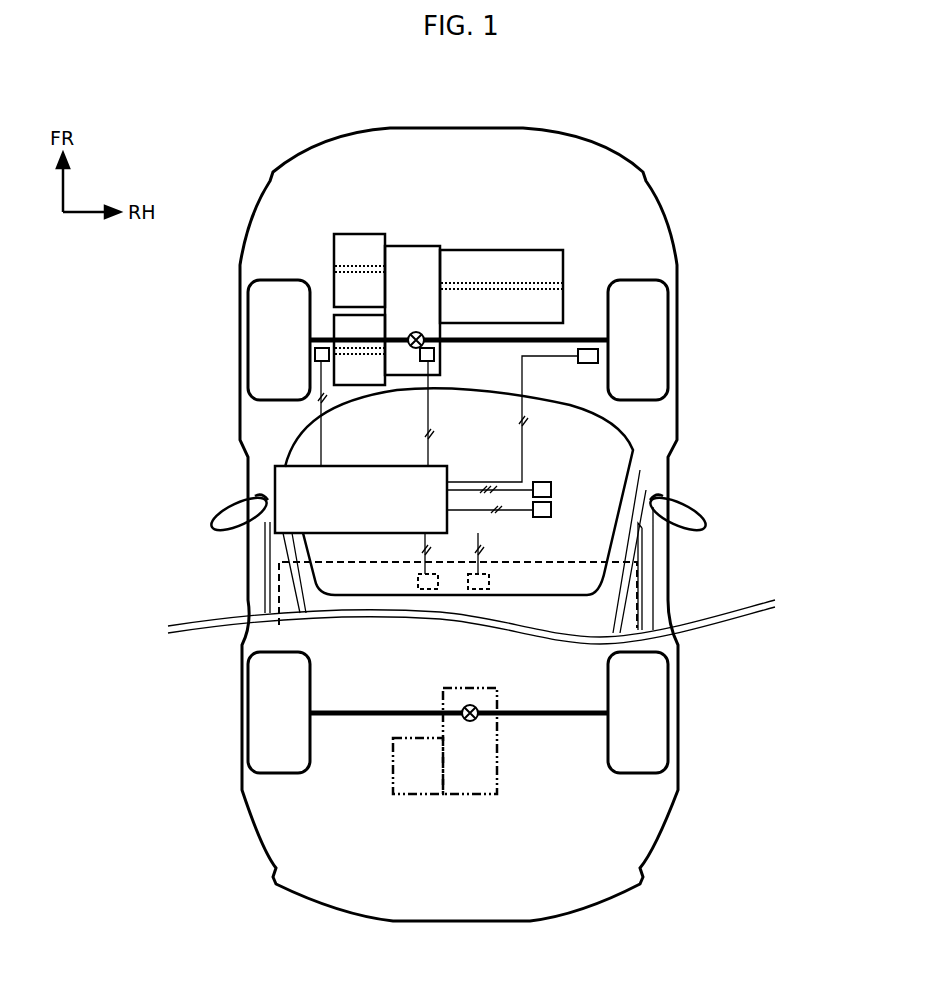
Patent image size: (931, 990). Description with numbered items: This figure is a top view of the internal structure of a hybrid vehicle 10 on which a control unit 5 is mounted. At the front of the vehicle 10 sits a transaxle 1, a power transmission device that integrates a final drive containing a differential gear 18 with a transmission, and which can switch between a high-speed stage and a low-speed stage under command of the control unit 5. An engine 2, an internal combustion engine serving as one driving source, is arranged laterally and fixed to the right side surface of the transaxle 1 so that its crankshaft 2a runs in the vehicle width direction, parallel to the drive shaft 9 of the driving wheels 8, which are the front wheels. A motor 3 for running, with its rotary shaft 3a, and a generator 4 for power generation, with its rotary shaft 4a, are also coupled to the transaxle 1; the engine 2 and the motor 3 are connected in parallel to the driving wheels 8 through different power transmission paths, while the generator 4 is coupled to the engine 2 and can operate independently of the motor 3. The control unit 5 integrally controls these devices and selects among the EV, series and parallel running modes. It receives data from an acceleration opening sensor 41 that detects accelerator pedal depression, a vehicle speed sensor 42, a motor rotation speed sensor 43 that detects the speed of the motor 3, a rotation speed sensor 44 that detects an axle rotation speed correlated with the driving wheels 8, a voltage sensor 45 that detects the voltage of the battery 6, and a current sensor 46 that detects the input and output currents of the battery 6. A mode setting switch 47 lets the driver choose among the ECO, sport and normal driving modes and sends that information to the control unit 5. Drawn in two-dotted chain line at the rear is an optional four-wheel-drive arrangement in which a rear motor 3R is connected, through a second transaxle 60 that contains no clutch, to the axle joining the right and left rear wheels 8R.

The vehicle 10 is at (748, 220).
The transaxle 1 is at (412, 246).
The engine 2 is at (522, 250).
The crankshaft 2a is at (470, 285).
The motor 3 is at (375, 386).
The rotary shaft of the motor 3a is at (362, 356).
The rear motor 3R is at (400, 795).
The generator 4 is at (356, 234).
The rotary shaft of the generator 4a is at (348, 268).
The control unit 5 is at (275, 486).
The battery 6 is at (640, 600).
The driving wheels 8 is at (248, 350).
The rear wheels 8R is at (248, 705).
The drive shaft 9 is at (495, 343).
The differential gear 18 is at (416, 349).
The acceleration opening sensor 41 is at (551, 489).
The vehicle speed sensor 42 is at (588, 364).
The motor rotation speed sensor 43 is at (315, 355).
The rotation speed sensor 44 is at (434, 355).
The voltage sensor 45 is at (418, 582).
The current sensor 46 is at (489, 582).
The mode setting switch 47 is at (551, 510).
The second transaxle 60 is at (497, 760).